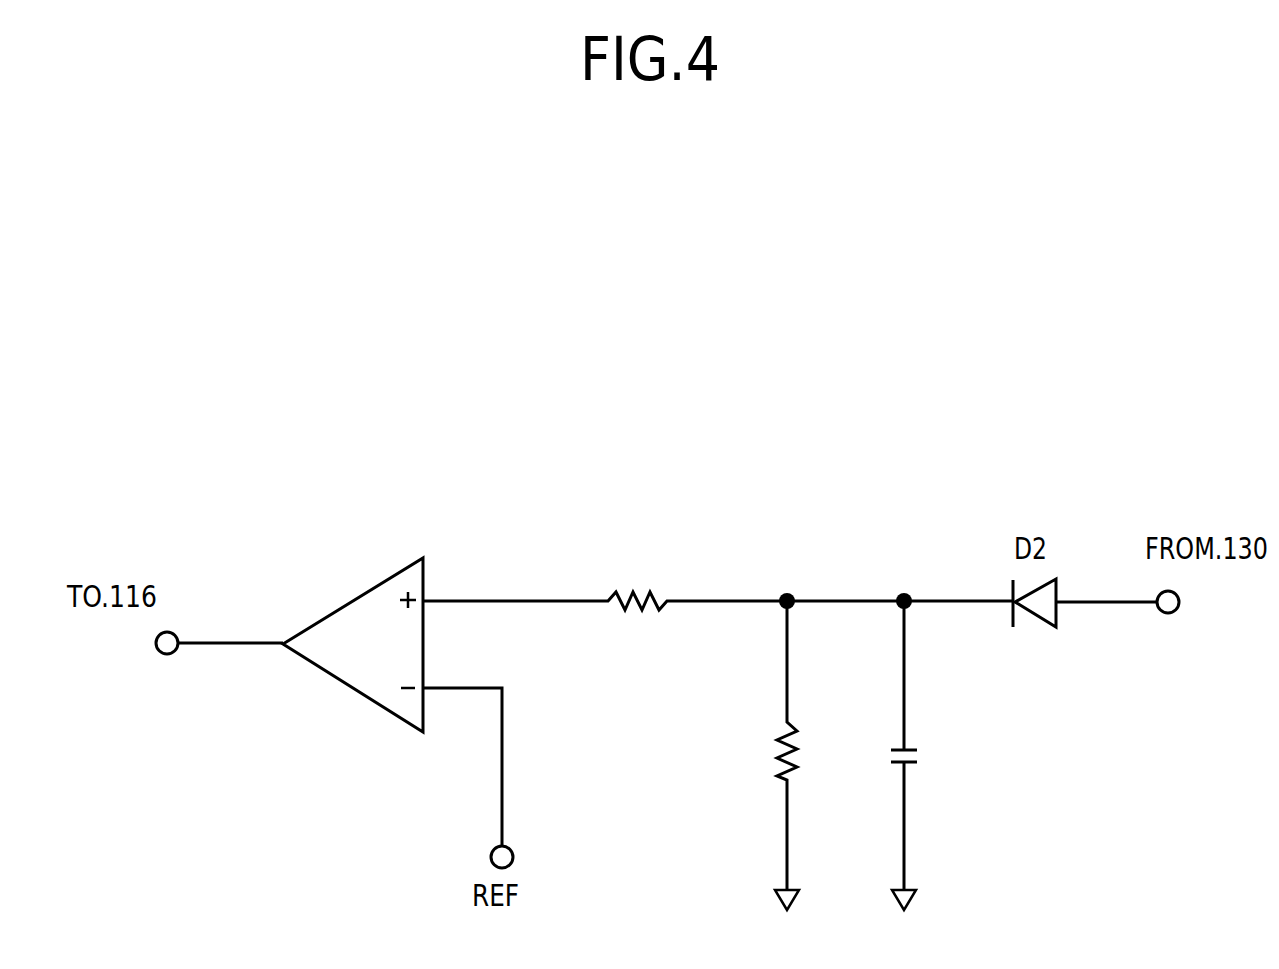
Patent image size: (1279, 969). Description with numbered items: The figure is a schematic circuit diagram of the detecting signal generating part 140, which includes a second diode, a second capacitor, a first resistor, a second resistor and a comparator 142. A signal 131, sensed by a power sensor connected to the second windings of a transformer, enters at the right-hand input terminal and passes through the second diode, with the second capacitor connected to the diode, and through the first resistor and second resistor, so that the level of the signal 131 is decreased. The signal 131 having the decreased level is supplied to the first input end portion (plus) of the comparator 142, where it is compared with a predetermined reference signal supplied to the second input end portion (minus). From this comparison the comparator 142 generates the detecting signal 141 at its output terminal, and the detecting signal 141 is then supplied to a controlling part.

The detecting signal generating part 140 is at (815, 508).
The detecting signal 141 is at (228, 647).
The comparator 142 is at (352, 598).
The signal 131 is at (1105, 607).